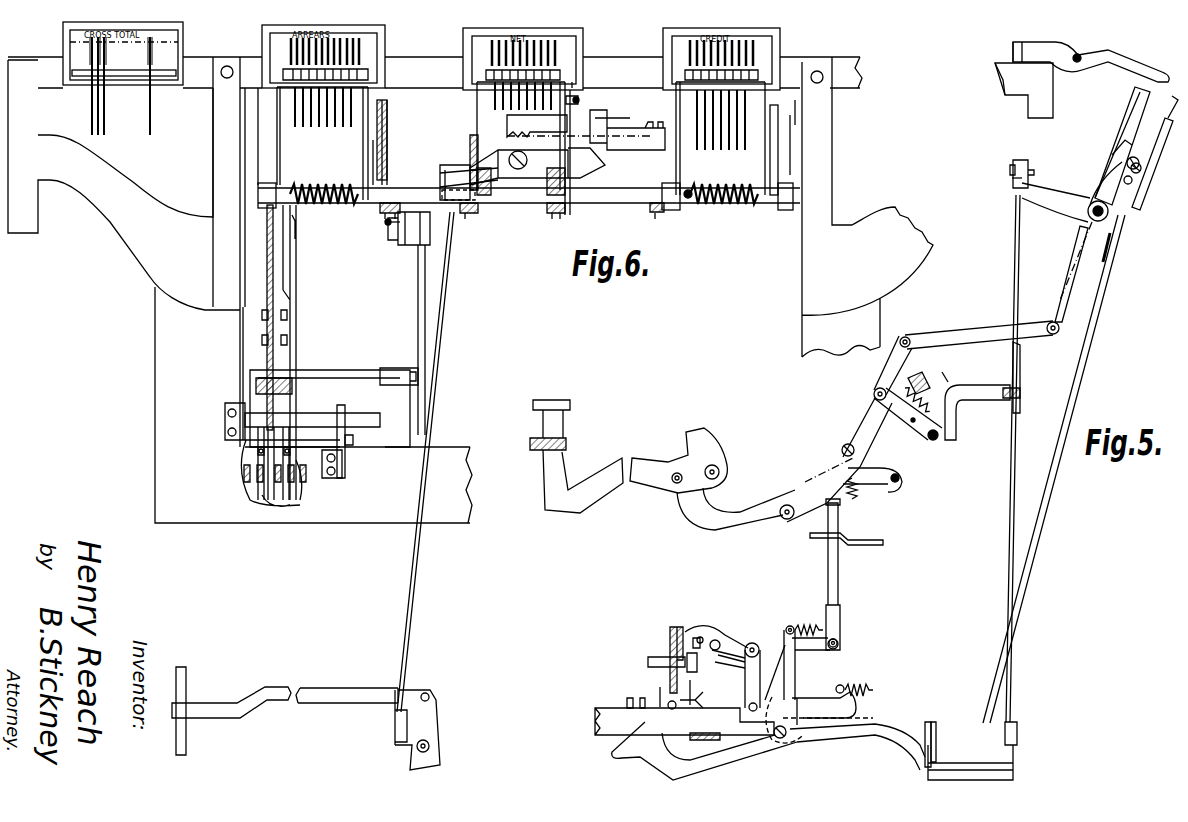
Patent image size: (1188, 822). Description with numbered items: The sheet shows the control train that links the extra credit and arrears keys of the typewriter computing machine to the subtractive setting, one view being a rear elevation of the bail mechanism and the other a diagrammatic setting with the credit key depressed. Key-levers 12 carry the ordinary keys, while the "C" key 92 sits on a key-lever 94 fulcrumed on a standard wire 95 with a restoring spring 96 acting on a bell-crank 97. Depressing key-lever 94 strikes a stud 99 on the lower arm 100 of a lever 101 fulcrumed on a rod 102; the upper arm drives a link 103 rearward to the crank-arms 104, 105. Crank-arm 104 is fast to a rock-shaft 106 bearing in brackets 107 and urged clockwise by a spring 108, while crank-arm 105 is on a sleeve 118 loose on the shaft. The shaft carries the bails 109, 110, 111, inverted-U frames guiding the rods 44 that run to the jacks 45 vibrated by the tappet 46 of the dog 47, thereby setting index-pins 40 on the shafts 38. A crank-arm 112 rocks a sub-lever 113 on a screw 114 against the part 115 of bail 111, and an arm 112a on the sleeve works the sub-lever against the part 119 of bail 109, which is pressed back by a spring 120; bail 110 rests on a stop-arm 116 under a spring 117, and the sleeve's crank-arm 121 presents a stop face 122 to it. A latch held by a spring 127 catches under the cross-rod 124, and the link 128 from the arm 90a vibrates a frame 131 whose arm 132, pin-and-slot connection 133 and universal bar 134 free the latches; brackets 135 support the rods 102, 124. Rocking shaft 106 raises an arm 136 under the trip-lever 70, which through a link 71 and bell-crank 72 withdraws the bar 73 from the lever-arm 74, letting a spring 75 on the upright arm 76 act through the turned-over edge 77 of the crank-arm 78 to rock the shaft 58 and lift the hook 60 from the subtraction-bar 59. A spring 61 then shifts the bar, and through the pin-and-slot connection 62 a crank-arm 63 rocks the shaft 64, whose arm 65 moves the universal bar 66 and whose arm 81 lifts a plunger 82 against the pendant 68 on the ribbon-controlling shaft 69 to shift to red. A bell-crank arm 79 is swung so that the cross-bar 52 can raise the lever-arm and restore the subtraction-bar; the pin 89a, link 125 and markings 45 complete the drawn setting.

In FIG. 6, the key-lever 12 is at (246, 490).
In FIG. 5, the shaft 38 is at (648, 658).
In FIG. 5, the index-pins 40 is at (630, 698).
In FIG. 6, the rods 44 is at (96, 110).
In FIG. 5, the rods 44 is at (1100, 326).
In FIG. 6, the jacks 45 is at (150, 52).
In FIG. 5, the jacks 45 is at (1128, 70).
In FIG. 5, the tappet 46 is at (1020, 58).
In FIG. 5, the dog 47 is at (1018, 90).
In FIG. 5, the cross-bar 52 is at (705, 740).
In FIG. 5, the shaft 58 is at (776, 738).
In FIG. 5, the subtraction-bar 59 is at (684, 707).
In FIG. 5, the hook 60 is at (800, 742).
In FIG. 5, the spring 61 is at (873, 688).
In FIG. 5, the pin-and-slot connection 62 is at (748, 707).
In FIG. 5, the crank-arm 63 is at (748, 682).
In FIG. 5, the shaft 64 is at (735, 654).
In FIG. 5, the arm 65 is at (732, 640).
In FIG. 5, the universal bar 66 is at (676, 628).
In FIG. 5, the pendant 68 is at (828, 542).
In FIG. 5, the ribbon-controlling shaft 69 is at (1010, 178).
In FIG. 6, the trip-lever 70 is at (455, 170).
In FIG. 5, the trip-lever 70 is at (1027, 164).
In FIG. 6, the link 71 is at (443, 356).
In FIG. 5, the link 71 is at (1010, 478).
In FIG. 6, the bell-crank 72 is at (438, 710).
In FIG. 5, the bell-crank 72 is at (930, 768).
In FIG. 6, the bar 73 is at (340, 686).
In FIG. 5, the bar 73 is at (933, 724).
In FIG. 6, the lever-arm 74 is at (176, 668).
In FIG. 5, the lever-arm 74 is at (924, 738).
In FIG. 5, the spring 75 is at (812, 626).
In FIG. 5, the upright arm 76 is at (805, 657).
In FIG. 5, the turned-over edge 77 is at (804, 698).
In FIG. 5, the crank-arm 78 is at (770, 668).
In FIG. 5, the bell-crank arm 79 is at (704, 751).
In FIG. 5, the arm 81 is at (786, 640).
In FIG. 5, the plunger 82 is at (838, 584).
In FIG. 6, the pin 89a is at (385, 222).
In FIG. 6, the arm 90a is at (412, 240).
In FIG. 5, the extra key 92 is at (565, 467).
In FIG. 6, the key-lever 94 is at (290, 470).
In FIG. 5, the key-lever 94 is at (684, 510).
In FIG. 6, the standard wire 95 is at (350, 410).
In FIG. 5, the standard wire 95 is at (897, 474).
In FIG. 5, the restoring spring 96 is at (858, 494).
In FIG. 5, the bell-crank 97 is at (678, 460).
In FIG. 6, the stud 99 is at (292, 500).
In FIG. 5, the stud 99 is at (784, 518).
In FIG. 5, the lower arm 100 is at (828, 450).
In FIG. 6, the lever 101 is at (262, 342).
In FIG. 5, the lever 101 is at (878, 366).
In FIG. 6, the rod 102 is at (345, 445).
In FIG. 5, the rod 102 is at (846, 444).
In FIG. 6, the link 103 is at (290, 334).
In FIG. 5, the link 103 is at (965, 330).
In FIG. 6, the crank-arm 104 is at (266, 250).
In FIG. 5, the crank-arm 104 is at (1058, 283).
In FIG. 6, the crank-arm 105 is at (305, 262).
In FIG. 6, the rock-shaft 106 is at (256, 200).
In FIG. 5, the rock-shaft 106 is at (1088, 218).
In FIG. 6, the bracket 107 is at (252, 118).
In FIG. 6, the spring 108 is at (742, 208).
In FIG. 6, the bail 109 is at (362, 84).
In FIG. 6, the bail 110 is at (483, 82).
In FIG. 5, the bail 110 is at (1130, 112).
In FIG. 6, the bail 111 is at (762, 82).
In FIG. 5, the bail 111 is at (1123, 126).
In FIG. 5, the crank-arm 112 is at (1120, 208).
In FIG. 6, the arm 112a is at (373, 150).
In FIG. 6, the sub-lever 113 is at (792, 136).
In FIG. 5, the sub-lever 113 is at (1140, 160).
In FIG. 6, the screw 114 is at (770, 156).
In FIG. 5, the screw 114 is at (1116, 152).
In FIG. 6, the part 115 is at (792, 112).
In FIG. 6, the stop-arm 116 is at (570, 156).
In FIG. 6, the spring 117 is at (580, 96).
In FIG. 6, the sleeve 118 is at (412, 188).
In FIG. 6, the part 119 is at (388, 110).
In FIG. 6, the spring 120 is at (312, 184).
In FIG. 6, the crank-arm 121 is at (470, 145).
In FIG. 5, the crank-arm 121 is at (1102, 182).
In FIG. 6, the stop face 122 is at (510, 130).
In FIG. 6, the cross-rod 124 is at (310, 412).
In FIG. 5, the cross-rod 124 is at (940, 440).
In FIG. 5, the link 125 is at (915, 425).
In FIG. 5, the spring 127 is at (930, 396).
In FIG. 6, the link 128 is at (417, 290).
In FIG. 5, the link 128 is at (1011, 355).
In FIG. 6, the frame 131 is at (340, 368).
In FIG. 5, the frame 131 is at (949, 369).
In FIG. 6, the arm 132 is at (396, 366).
In FIG. 5, the arm 132 is at (985, 400).
In FIG. 5, the pin-and-slot connection 133 is at (1021, 390).
In FIG. 6, the universal bar 134 is at (292, 378).
In FIG. 5, the universal bar 134 is at (925, 386).
In FIG. 6, the bracket 135 is at (225, 422).
In FIG. 6, the arm 136 is at (445, 180).
In FIG. 5, the arm 136 is at (1058, 193).